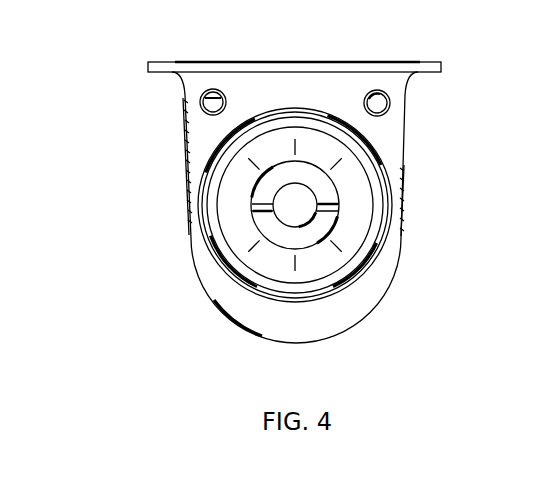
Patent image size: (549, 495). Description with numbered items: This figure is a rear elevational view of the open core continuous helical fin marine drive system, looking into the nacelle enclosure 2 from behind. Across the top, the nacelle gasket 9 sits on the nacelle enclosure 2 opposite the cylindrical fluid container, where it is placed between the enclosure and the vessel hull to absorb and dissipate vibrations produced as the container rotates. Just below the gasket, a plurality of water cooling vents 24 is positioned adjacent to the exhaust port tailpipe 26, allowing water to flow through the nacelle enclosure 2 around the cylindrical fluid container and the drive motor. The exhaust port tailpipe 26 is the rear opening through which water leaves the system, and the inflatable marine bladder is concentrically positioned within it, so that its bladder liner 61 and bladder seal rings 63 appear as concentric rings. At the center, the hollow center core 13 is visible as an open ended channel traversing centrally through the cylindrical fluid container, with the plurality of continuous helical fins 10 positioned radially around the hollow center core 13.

The nacelle enclosure 2 is at (74, 159).
The nacelle gasket 9 is at (302, 62).
The water cooling vents 24 is at (200, 102).
The bladder seal rings 63 is at (258, 136).
The bladder liner 61 is at (336, 133).
The exhaust port tailpipe 26 is at (383, 233).
The continuous helical fins 10 is at (252, 193).
The hollow center core 13 is at (311, 188).